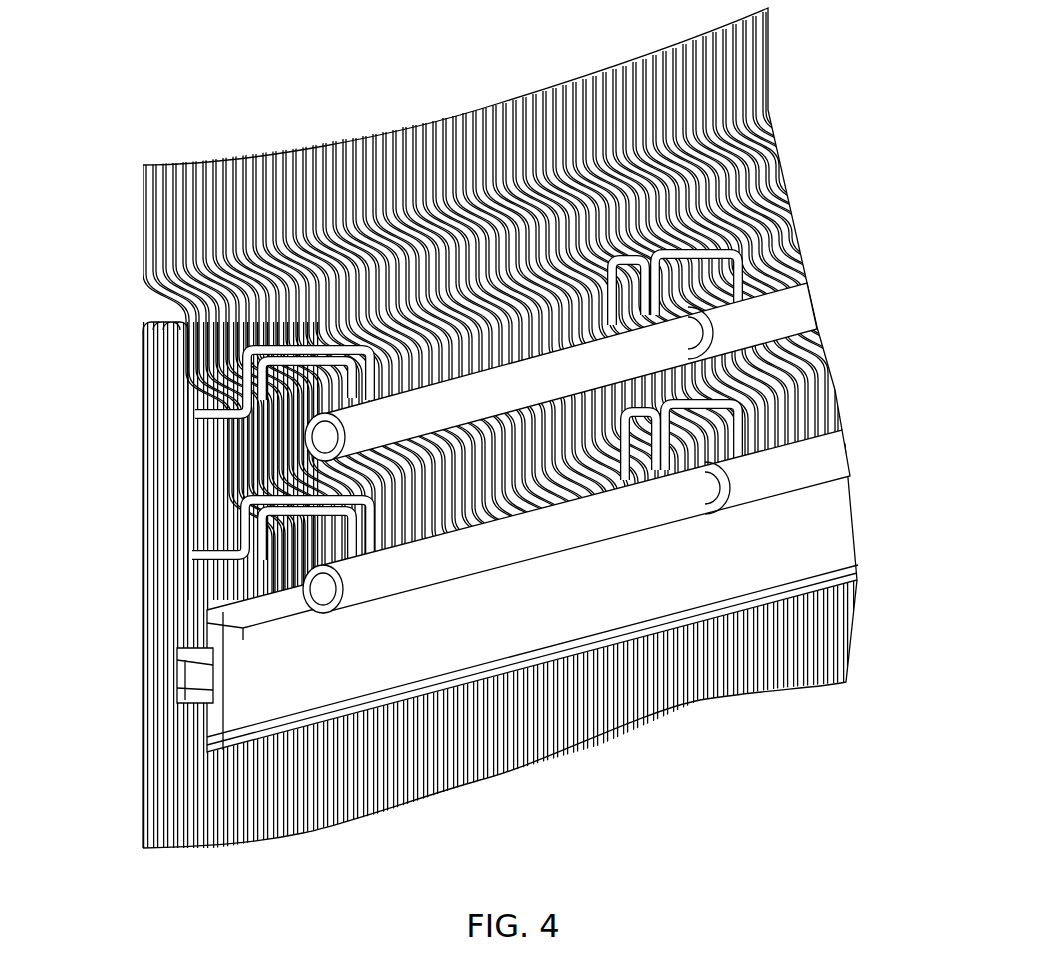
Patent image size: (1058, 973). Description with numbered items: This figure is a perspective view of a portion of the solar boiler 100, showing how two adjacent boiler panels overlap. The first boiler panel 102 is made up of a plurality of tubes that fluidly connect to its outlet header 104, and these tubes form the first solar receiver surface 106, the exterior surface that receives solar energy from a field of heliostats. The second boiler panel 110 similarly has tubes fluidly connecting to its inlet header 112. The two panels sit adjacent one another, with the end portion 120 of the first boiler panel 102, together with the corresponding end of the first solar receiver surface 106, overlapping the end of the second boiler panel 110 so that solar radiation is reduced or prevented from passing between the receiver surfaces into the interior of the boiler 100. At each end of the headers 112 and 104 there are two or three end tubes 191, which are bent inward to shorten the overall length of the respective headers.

The solar boiler 100 is at (511, 454).
The second boiler panel 110 is at (143, 246).
The end portion of first boiler panel 120 is at (143, 470).
The first boiler panel 102 is at (143, 728).
The outlet header 104 is at (423, 578).
The first solar receiver surface 106 is at (143, 620).
The inlet header 112 is at (423, 413).
The end tubes 191 is at (748, 449).